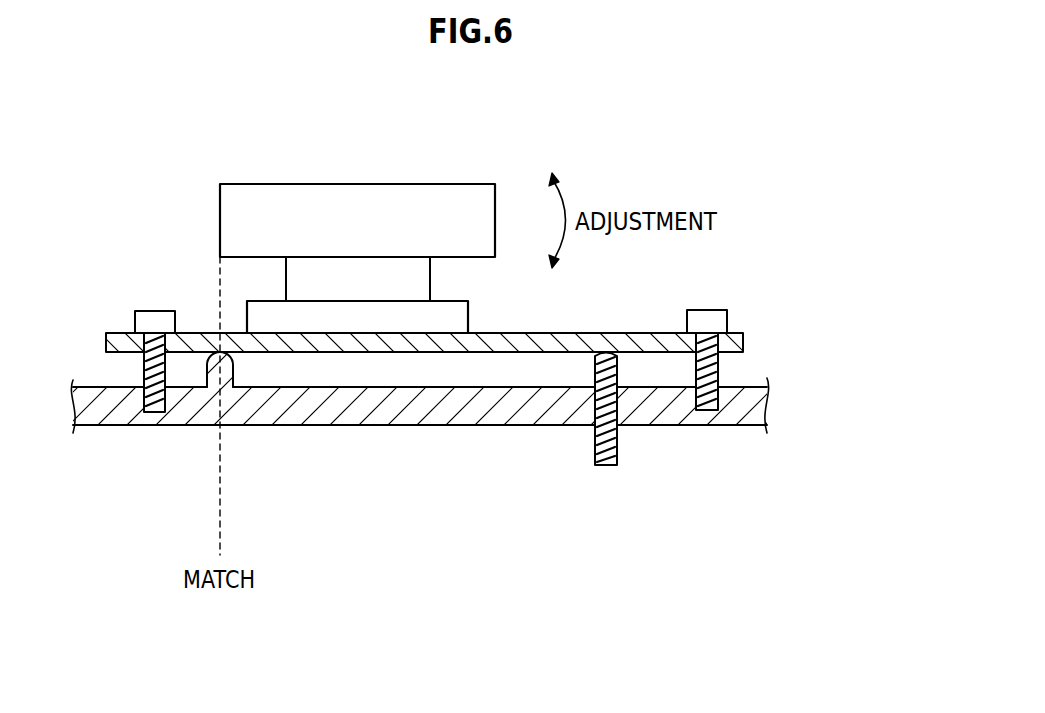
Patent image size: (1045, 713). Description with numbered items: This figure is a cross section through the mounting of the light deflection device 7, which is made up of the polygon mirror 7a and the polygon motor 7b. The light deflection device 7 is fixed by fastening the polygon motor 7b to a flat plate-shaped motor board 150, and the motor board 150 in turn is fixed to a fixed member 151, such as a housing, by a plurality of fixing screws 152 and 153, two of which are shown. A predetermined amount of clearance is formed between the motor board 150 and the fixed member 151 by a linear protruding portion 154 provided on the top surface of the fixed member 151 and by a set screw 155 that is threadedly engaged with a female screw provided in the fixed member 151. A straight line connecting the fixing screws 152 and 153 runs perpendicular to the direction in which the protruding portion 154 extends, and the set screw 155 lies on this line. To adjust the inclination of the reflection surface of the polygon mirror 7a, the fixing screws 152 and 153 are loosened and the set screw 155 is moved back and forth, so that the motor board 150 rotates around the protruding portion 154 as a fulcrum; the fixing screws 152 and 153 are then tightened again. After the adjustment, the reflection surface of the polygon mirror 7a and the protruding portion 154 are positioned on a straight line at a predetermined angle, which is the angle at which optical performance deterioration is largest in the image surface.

The light deflection device 7 is at (382, 201).
The polygon mirror 7a is at (272, 203).
The polygon motor 7b is at (468, 318).
The motor board 150 is at (743, 340).
The fixed member 151 is at (503, 417).
The fixing screw 152 is at (707, 320).
The fixing screw 153 is at (155, 320).
The protruding portion 154 is at (225, 367).
The set screw 155 is at (605, 466).